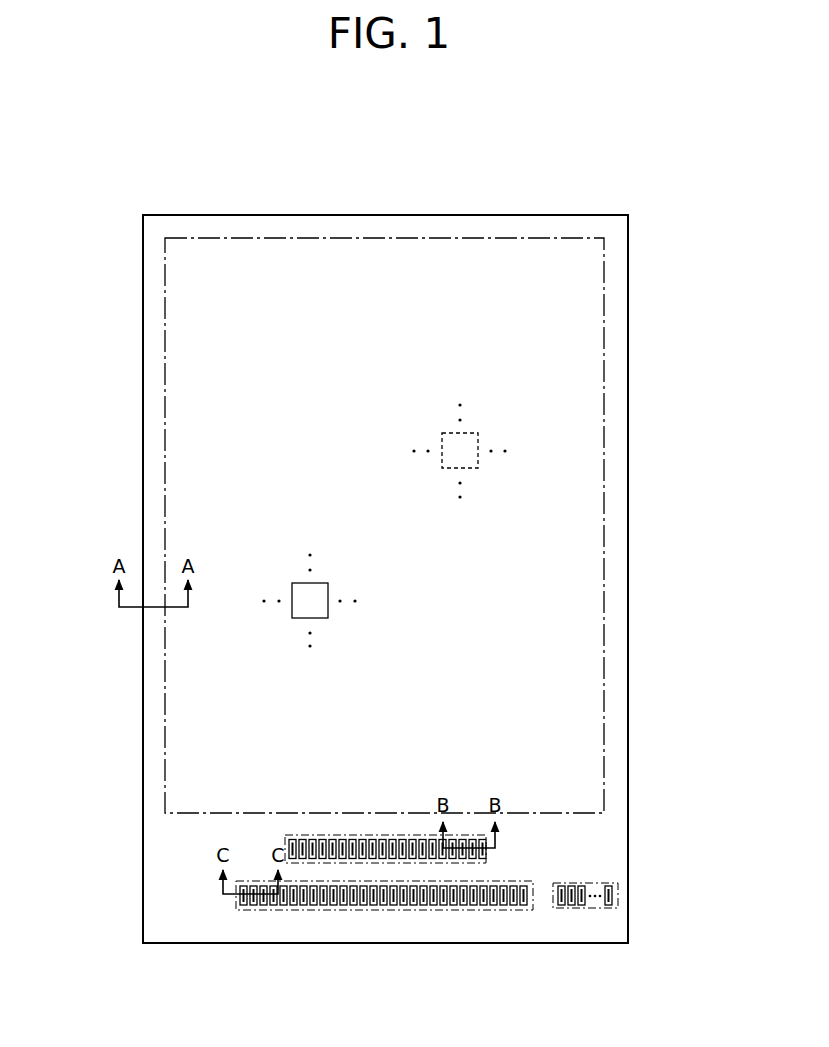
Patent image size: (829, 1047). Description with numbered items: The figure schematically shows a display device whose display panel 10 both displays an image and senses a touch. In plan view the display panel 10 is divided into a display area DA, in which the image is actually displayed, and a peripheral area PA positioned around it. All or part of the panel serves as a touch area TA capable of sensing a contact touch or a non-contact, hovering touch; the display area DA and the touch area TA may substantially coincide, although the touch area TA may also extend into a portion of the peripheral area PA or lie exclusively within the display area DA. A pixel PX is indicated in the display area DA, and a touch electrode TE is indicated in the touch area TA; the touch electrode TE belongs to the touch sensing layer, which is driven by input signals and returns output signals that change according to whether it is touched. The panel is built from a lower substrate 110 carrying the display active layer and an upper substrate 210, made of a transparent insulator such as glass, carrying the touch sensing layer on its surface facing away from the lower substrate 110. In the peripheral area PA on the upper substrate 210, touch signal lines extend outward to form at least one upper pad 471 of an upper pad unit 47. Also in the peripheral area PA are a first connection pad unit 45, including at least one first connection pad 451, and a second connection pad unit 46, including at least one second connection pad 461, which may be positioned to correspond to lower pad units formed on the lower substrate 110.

The display panel 10 is at (616, 184).
The lower substrate 110 is at (628, 398).
The upper substrate 210 is at (385, 579).
The peripheral area PA is at (155, 388).
The display area DA is at (200, 455).
The touch area TA is at (384, 525).
The pixel PX is at (459, 450).
The touch electrode TE is at (309, 600).
The first connection pad unit 45 is at (333, 838).
The first connection pad 451 is at (367, 847).
The second connection pad unit 46 is at (298, 910).
The second connection pad 461 is at (350, 905).
The upper pad unit 47 is at (558, 908).
The upper pad 471 is at (592, 904).